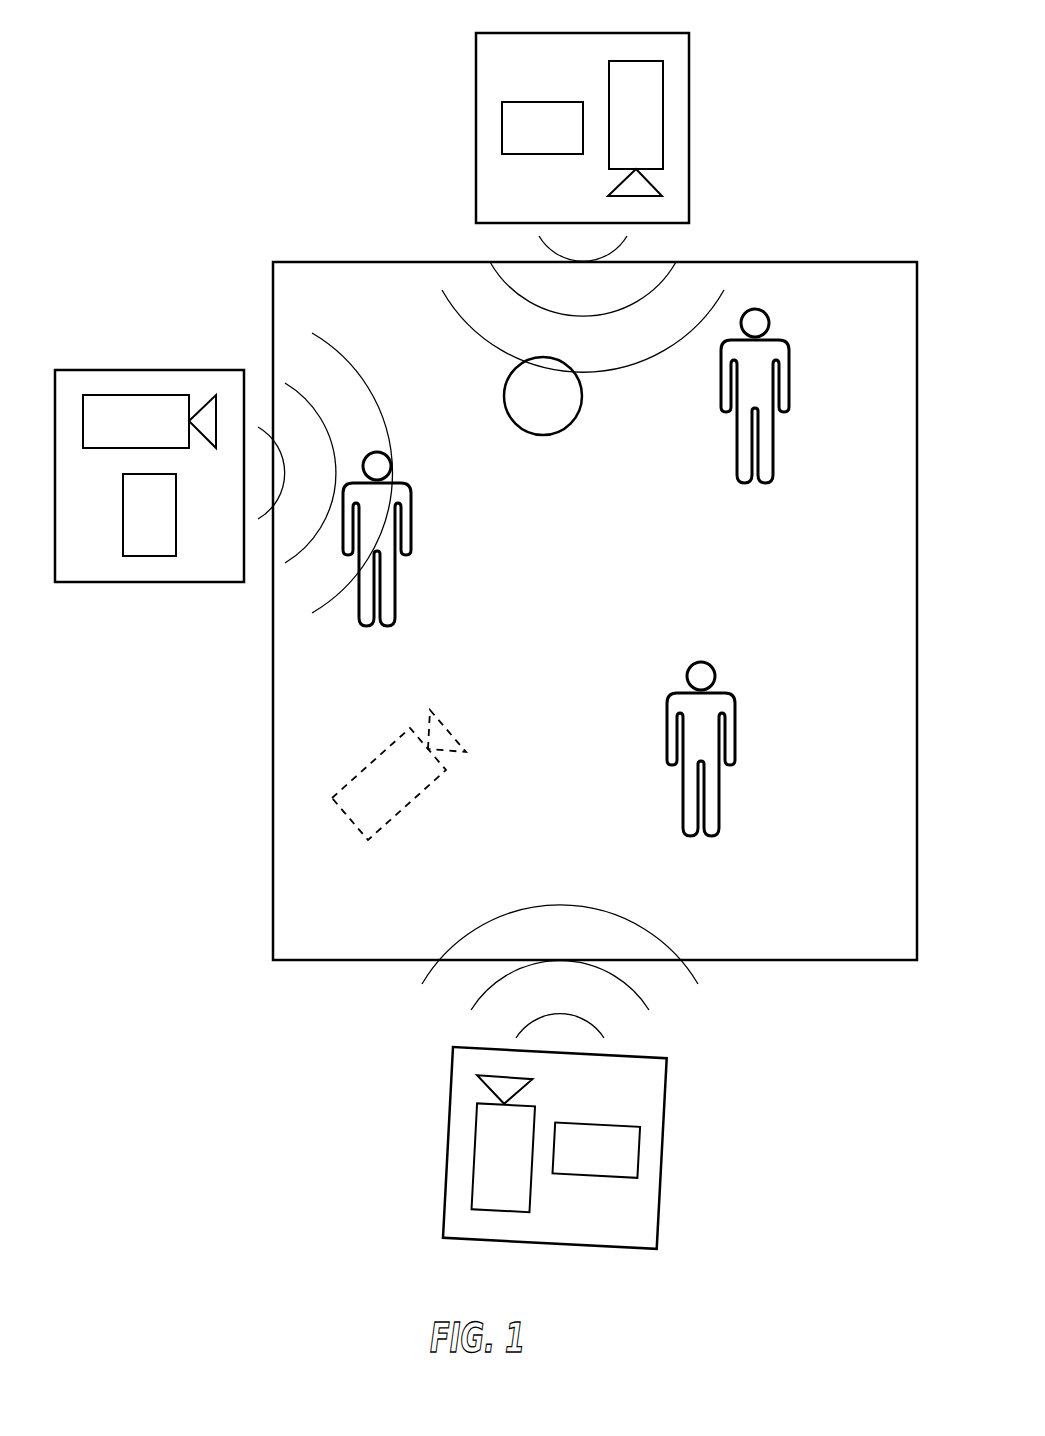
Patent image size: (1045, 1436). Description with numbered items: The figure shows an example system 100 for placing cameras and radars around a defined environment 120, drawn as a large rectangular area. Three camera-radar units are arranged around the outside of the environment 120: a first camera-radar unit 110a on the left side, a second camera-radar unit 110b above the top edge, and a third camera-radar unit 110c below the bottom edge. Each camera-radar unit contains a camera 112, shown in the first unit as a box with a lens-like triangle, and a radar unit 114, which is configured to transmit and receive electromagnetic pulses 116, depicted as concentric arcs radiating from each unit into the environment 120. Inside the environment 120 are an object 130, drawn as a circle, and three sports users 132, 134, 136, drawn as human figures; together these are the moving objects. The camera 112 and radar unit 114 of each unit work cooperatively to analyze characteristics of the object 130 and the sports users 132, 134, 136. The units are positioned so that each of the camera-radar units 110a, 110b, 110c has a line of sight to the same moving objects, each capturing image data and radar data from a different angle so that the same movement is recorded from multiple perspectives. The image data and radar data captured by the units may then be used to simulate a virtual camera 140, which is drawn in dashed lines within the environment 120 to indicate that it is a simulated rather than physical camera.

The system 100 is at (124, 44).
The first camera-radar unit 110a is at (149, 474).
The second camera-radar unit 110b is at (618, 33).
The camera-radar unit 110c is at (452, 1093).
The camera 112 is at (128, 395).
The radar unit 114 is at (128, 556).
The electromagnetic pulses 116 is at (704, 988).
The defined environment 120 is at (859, 262).
The object 130 is at (563, 428).
The sports user 132 is at (738, 450).
The sports user 134 is at (411, 501).
The sports user 136 is at (718, 798).
The virtual camera 140 is at (412, 796).